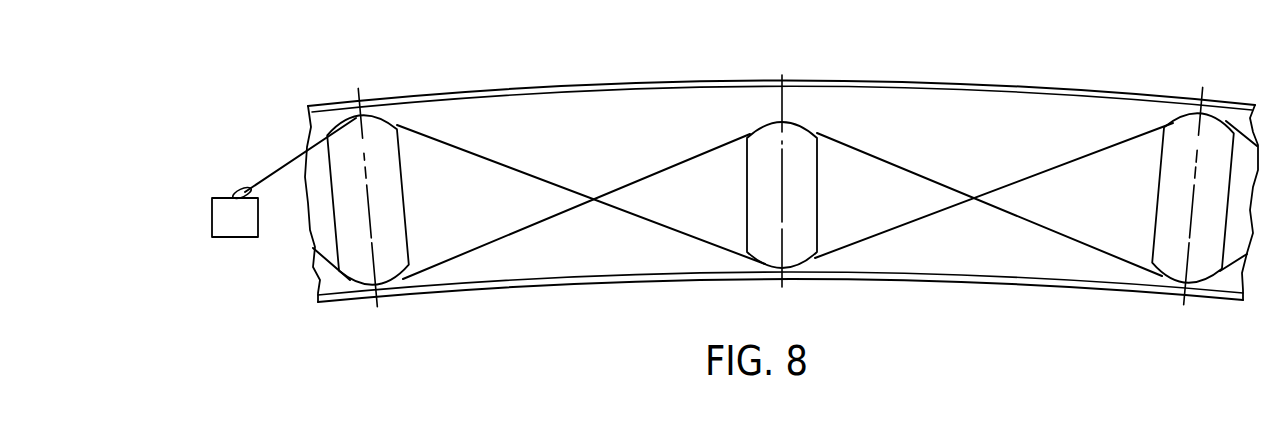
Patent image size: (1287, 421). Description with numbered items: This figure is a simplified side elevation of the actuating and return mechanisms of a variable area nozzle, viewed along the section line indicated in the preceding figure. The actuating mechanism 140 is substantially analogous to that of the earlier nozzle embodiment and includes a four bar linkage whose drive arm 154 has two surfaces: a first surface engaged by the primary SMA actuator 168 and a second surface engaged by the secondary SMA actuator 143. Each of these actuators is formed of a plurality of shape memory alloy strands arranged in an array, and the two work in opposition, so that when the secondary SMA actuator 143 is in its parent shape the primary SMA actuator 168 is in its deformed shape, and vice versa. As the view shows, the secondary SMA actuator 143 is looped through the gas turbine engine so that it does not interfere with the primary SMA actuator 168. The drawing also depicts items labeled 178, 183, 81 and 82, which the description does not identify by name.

The actuating mechanism 140 is at (810, 102).
The secondary SMA actuator 143 is at (667, 167).
The drive arm 154 is at (802, 252).
The primary SMA actuator 168 is at (652, 213).
The belt run to tensioner 178 is at (288, 163).
The idler roller 183 is at (388, 273).
The motor housing 81 is at (243, 226).
The tensioner pulley 82 is at (195, 228).